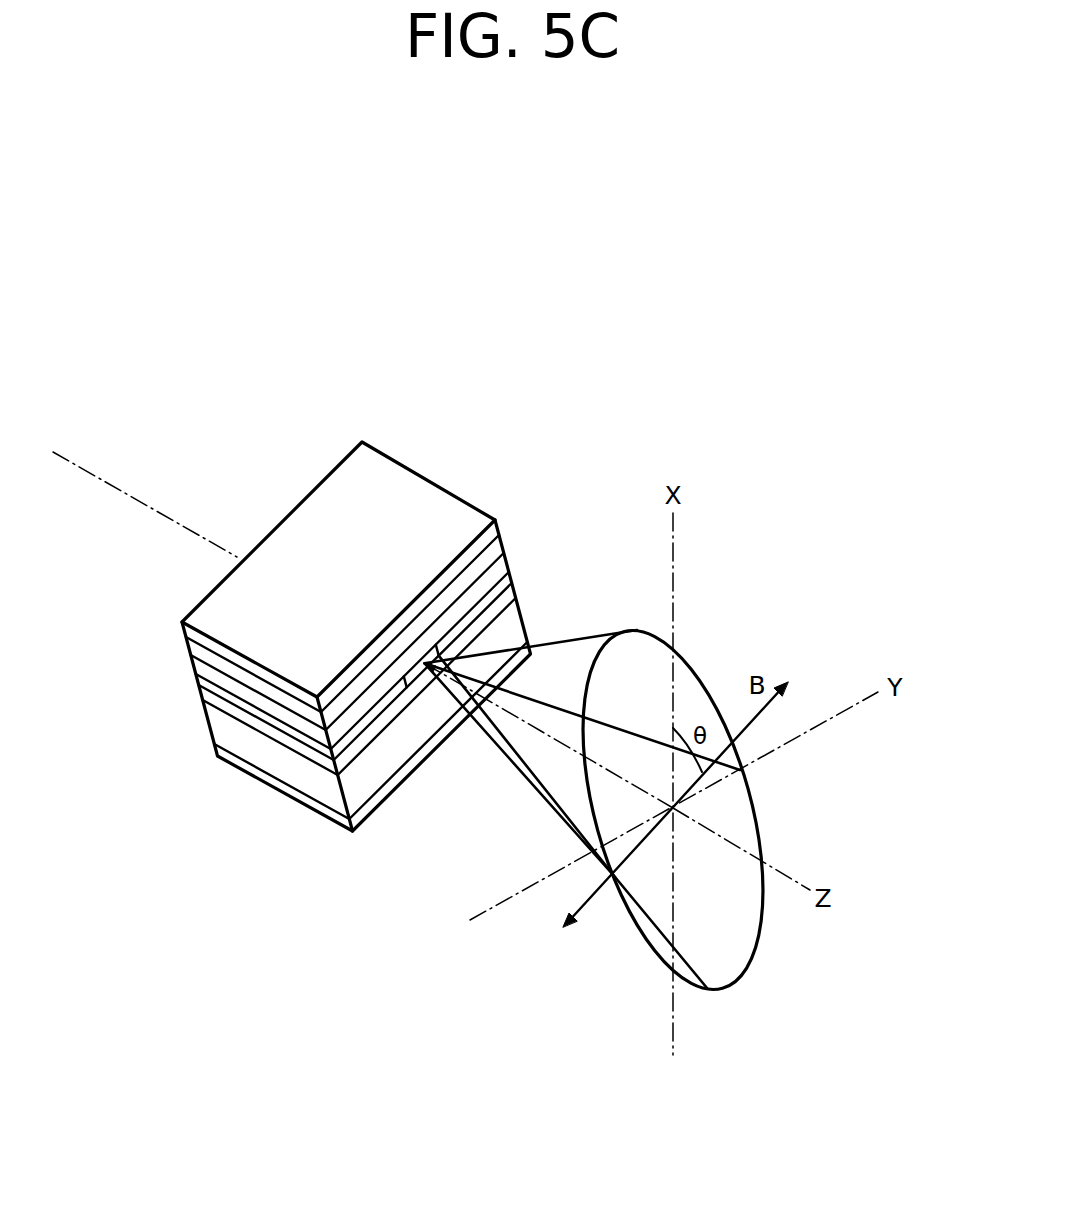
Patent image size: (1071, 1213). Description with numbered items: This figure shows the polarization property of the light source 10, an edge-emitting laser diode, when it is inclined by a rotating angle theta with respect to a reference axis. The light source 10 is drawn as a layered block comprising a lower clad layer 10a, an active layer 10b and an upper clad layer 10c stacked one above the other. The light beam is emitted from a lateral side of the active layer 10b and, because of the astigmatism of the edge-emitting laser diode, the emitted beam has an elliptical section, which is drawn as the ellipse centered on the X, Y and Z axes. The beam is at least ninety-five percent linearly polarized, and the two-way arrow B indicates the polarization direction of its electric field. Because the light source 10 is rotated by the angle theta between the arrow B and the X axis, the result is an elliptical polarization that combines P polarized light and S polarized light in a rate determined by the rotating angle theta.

The light source 10 is at (350, 615).
The lower clad layer 10a is at (212, 695).
The active layer 10b is at (503, 582).
The upper clad layer 10c is at (203, 667).